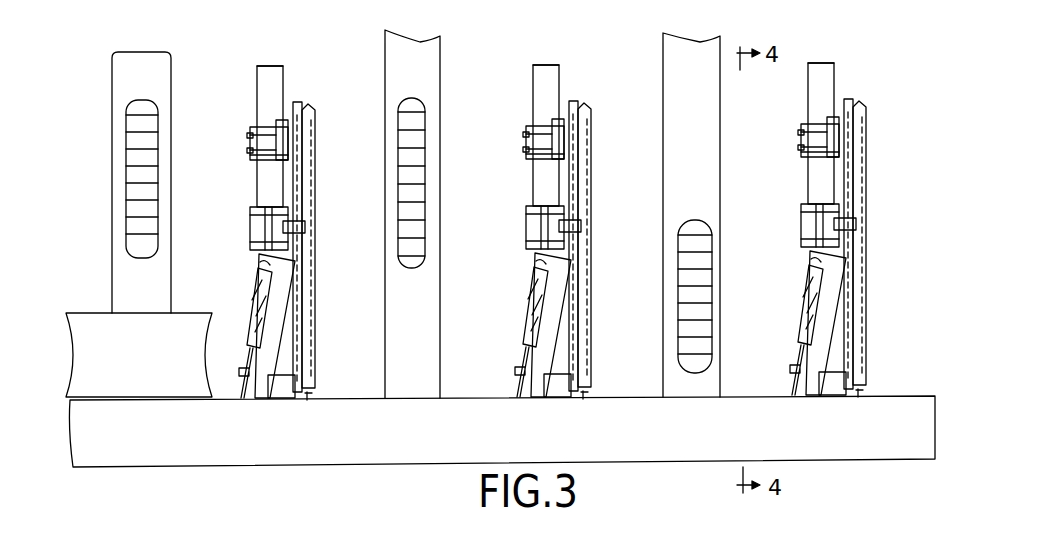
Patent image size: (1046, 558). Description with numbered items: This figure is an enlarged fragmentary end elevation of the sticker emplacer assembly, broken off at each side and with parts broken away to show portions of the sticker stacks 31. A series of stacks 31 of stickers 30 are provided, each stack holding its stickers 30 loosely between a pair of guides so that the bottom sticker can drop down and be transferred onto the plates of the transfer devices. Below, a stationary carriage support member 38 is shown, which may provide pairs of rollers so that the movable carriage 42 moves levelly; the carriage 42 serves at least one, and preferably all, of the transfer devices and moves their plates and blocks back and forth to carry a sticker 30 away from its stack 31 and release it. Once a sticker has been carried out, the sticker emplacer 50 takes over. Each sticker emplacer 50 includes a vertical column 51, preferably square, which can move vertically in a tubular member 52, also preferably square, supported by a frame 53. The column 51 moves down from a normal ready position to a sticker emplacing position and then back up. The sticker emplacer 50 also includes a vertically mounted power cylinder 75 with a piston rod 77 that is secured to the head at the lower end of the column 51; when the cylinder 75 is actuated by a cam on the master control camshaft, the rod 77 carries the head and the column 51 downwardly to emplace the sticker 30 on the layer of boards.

The stickers 30 is at (136, 197).
The sticker stacks 31 is at (120, 80).
The stationary carriage support member 38 is at (148, 368).
The movable carriage 42 is at (148, 456).
The sticker emplacer 50 is at (276, 57).
The vertical column 51 is at (282, 390).
The tubular member 52 is at (259, 92).
The frame 53 is at (250, 147).
The power cylinder 75 is at (313, 257).
The piston rod 77 is at (310, 396).